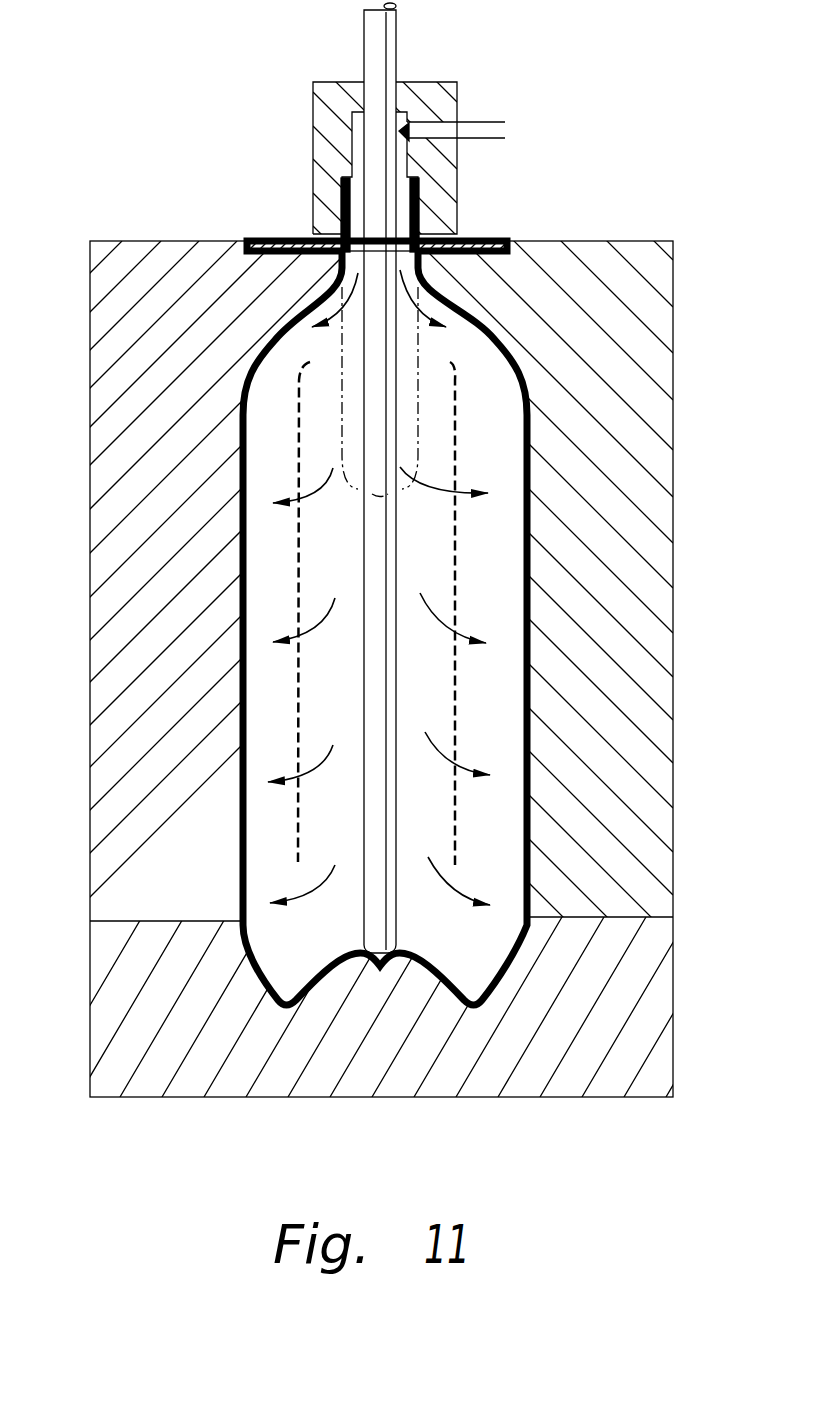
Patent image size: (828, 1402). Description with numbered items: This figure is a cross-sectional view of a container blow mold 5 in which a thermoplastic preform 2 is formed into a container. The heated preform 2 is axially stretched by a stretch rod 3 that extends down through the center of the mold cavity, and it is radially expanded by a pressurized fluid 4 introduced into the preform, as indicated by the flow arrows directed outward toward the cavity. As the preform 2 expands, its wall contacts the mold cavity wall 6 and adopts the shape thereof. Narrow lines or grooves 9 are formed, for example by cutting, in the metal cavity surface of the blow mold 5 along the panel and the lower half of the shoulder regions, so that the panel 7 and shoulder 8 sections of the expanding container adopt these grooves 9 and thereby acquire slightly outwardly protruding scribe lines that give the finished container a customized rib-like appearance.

The thermoplastic preform 2 is at (425, 353).
The stretch rod 3 is at (396, 642).
The pressurized fluid 4 is at (412, 128).
The blow mold 5 is at (673, 545).
The mold cavity wall 6 is at (523, 717).
The panel section 7 is at (527, 745).
The shoulder section 8 is at (507, 341).
The narrow lines or grooves 9 is at (292, 578).